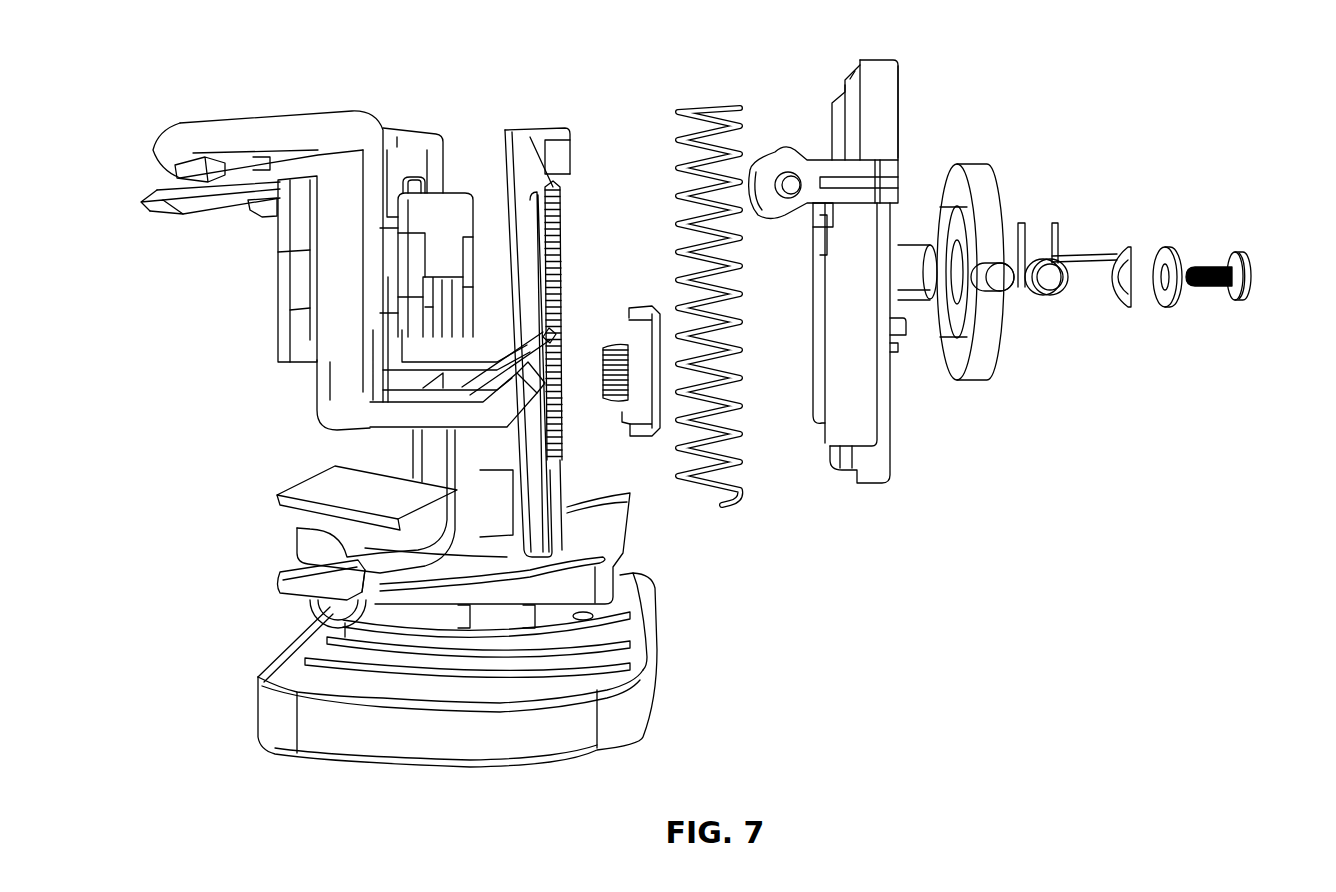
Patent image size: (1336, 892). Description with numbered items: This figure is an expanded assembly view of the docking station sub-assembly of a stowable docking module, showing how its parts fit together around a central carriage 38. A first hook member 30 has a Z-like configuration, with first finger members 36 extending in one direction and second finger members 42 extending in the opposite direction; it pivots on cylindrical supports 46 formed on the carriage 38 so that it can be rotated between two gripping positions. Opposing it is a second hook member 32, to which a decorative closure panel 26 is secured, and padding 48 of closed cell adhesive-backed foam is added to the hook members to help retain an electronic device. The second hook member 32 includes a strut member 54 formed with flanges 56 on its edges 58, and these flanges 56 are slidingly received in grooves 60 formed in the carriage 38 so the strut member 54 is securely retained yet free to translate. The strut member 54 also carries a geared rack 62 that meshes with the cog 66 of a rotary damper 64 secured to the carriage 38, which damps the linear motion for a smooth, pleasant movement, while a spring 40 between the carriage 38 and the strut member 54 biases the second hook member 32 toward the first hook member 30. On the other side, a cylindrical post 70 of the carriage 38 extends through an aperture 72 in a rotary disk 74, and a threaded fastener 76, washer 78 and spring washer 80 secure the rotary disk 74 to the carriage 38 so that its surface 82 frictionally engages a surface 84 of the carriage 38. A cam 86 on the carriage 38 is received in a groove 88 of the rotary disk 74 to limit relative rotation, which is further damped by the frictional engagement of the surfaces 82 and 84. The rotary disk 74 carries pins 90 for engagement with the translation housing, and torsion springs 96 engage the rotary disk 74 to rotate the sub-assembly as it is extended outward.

The decorative closure panel 26 is at (305, 733).
The first hook member 30 is at (375, 160).
The second hook member 32 is at (283, 577).
The first finger members 36 is at (165, 163).
The carriage 38 is at (872, 82).
The spring 40 is at (712, 112).
The second finger members 42 is at (470, 410).
The cylindrical supports 46 is at (790, 160).
The foam/padding 48 is at (292, 302).
The strut member 54 is at (515, 470).
The flanges 56 is at (563, 220).
The edges 58 is at (558, 180).
The grooves 60 is at (815, 412).
The geared rack 62 is at (568, 266).
The rotary damper 64 is at (632, 342).
The cog 66 is at (603, 382).
The cylindrical post 70 is at (955, 300).
The aperture 72 is at (930, 268).
The rotary disk 74 is at (980, 188).
The threaded fastener 76 is at (1255, 276).
The washer 78 is at (1165, 248).
The spring washer 80 is at (1125, 253).
The surface 82 is at (954, 193).
The surface 84 is at (905, 82).
The cam 86 is at (897, 350).
The groove 88 is at (915, 338).
The pins 90 is at (1003, 275).
The torsion springs 96 is at (1068, 280).